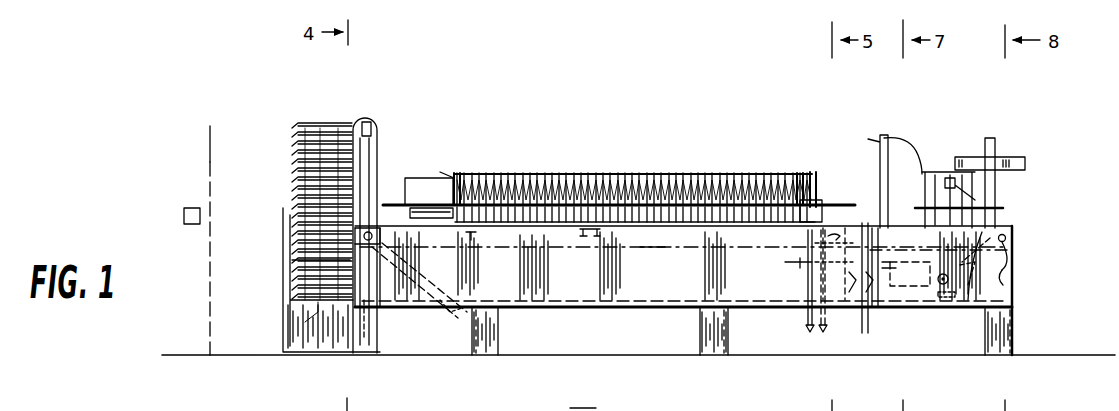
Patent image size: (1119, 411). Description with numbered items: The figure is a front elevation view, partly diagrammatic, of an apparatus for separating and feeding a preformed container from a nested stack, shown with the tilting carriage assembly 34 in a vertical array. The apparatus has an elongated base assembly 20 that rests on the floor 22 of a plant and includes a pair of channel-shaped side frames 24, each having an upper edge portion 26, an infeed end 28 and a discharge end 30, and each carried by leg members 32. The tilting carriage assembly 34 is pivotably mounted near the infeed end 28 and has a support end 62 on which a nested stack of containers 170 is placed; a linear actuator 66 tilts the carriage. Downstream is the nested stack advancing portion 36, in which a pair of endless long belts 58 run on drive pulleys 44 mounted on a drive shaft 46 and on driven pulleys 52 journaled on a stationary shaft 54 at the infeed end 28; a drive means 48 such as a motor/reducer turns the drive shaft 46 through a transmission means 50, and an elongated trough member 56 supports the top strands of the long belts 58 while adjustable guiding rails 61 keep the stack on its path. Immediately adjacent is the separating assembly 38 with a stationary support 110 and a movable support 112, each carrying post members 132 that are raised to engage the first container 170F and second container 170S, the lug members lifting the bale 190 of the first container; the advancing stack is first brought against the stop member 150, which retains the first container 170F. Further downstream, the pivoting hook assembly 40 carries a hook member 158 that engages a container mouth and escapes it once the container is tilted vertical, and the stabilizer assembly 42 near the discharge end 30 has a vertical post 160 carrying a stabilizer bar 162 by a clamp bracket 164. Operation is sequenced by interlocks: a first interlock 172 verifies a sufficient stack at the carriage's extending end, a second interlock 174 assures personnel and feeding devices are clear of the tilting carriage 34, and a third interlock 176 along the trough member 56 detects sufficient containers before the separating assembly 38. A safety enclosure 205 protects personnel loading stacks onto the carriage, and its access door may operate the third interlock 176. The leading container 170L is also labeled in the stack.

The base assembly 20 is at (573, 368).
The floor 22 is at (668, 370).
The side frames 24 is at (626, 310).
The upper edge portion 26 is at (1002, 234).
The infeed end 28 is at (389, 312).
The discharge end 30 is at (1020, 258).
The leg members 32 is at (500, 338).
The tilting carriage assembly 34 is at (353, 112).
The nested stack advancing portion 36 is at (635, 131).
The separating assembly 38 is at (770, 90).
The pivoting hook assembly 40 is at (872, 118).
The stabilizer assembly 42 is at (990, 118).
The drive pulleys 44 is at (1008, 268).
The drive shaft 46 is at (1004, 282).
The drive means 48 is at (912, 287).
The transmission means 50 is at (973, 272).
The driven pulleys 52 is at (338, 266).
The stationary shaft 54 is at (374, 238).
The trough member 56 is at (472, 240).
The long belts 58 is at (652, 250).
The guiding rails 61 is at (394, 203).
The support end 62 is at (315, 346).
The linear actuator 66 is at (442, 305).
The stationary support 110 is at (800, 264).
The movable support 112 is at (833, 268).
The post member 132 is at (812, 316).
The stop member 150 is at (838, 236).
The hook member 158 is at (900, 147).
The vertical post 160 is at (997, 141).
The stabilizer bar 162 is at (1025, 163).
The clamp bracket 164 is at (937, 172).
The nested stack of containers 170 is at (283, 150).
The leading plate 170L is at (455, 175).
The second container 170S is at (800, 176).
The first container 170F is at (822, 172).
The first interlock 172 is at (372, 128).
The second interlock 174 is at (184, 217).
The third interlock 176 is at (592, 238).
The bale 190 is at (688, 178).
The safety enclosure 205 is at (210, 157).